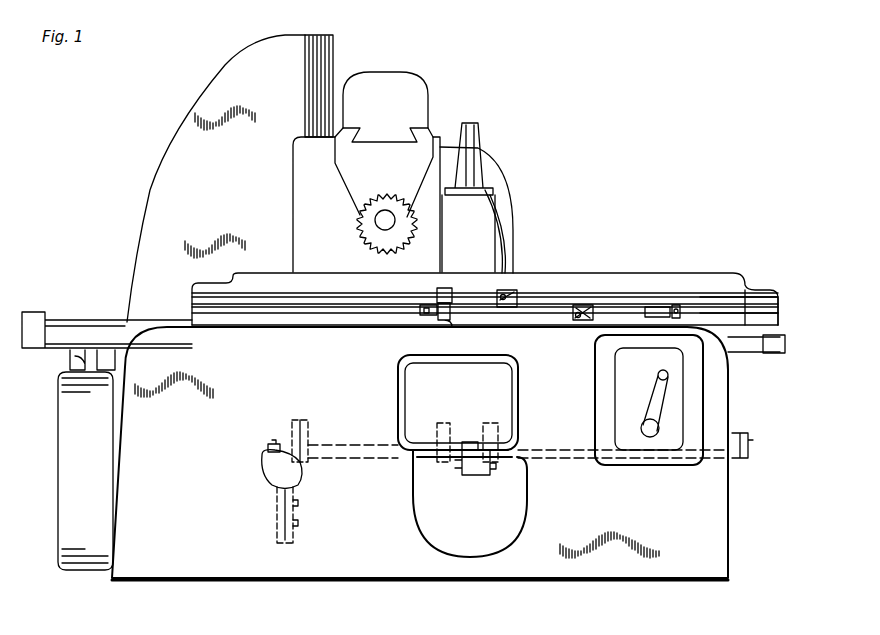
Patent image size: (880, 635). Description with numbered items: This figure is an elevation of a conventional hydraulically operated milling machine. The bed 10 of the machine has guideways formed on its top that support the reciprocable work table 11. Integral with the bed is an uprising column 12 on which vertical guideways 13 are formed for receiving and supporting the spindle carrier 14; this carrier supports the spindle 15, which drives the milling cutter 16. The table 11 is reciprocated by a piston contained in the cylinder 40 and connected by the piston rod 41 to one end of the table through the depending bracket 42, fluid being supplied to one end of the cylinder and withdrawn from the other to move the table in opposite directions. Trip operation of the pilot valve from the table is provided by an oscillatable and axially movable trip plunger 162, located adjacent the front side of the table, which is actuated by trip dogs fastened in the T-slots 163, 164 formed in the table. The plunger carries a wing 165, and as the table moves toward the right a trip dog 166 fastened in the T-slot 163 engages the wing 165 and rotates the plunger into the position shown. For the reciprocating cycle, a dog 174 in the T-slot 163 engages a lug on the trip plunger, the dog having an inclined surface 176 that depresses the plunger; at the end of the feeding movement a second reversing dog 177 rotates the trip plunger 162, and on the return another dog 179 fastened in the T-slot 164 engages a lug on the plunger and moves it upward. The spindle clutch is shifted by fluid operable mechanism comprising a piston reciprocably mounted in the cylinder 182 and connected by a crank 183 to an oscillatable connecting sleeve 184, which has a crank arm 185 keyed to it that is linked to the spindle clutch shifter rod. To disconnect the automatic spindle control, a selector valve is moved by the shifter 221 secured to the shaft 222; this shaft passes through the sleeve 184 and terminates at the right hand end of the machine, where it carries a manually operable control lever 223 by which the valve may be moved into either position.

The bed 10 is at (125, 477).
The work table 11 is at (711, 282).
The column 12 is at (168, 140).
The vertical guideways 13 is at (330, 56).
The spindle carrier 14 is at (430, 135).
The spindle 15 is at (375, 218).
The milling cutter 16 is at (362, 238).
The cylinder 40 is at (88, 325).
The piston rod 41 is at (750, 345).
The depending bracket 42 is at (771, 353).
The trip plunger 162 is at (448, 293).
The T-slot 163 is at (757, 313).
The T-slot 164 is at (745, 297).
The wing 165 is at (455, 318).
The trip dog 166 is at (430, 320).
The dog 174 is at (583, 307).
The inclined surface 176 is at (587, 307).
The second reversing dog 177 is at (655, 307).
The dog 179 is at (512, 295).
The cylinder 182 is at (297, 483).
The crank 183 is at (290, 442).
The connecting sleeve 184 is at (371, 447).
The crank arm 185 is at (470, 475).
The shifter 221 is at (276, 448).
The shaft 222 is at (580, 450).
The control lever 223 is at (748, 440).